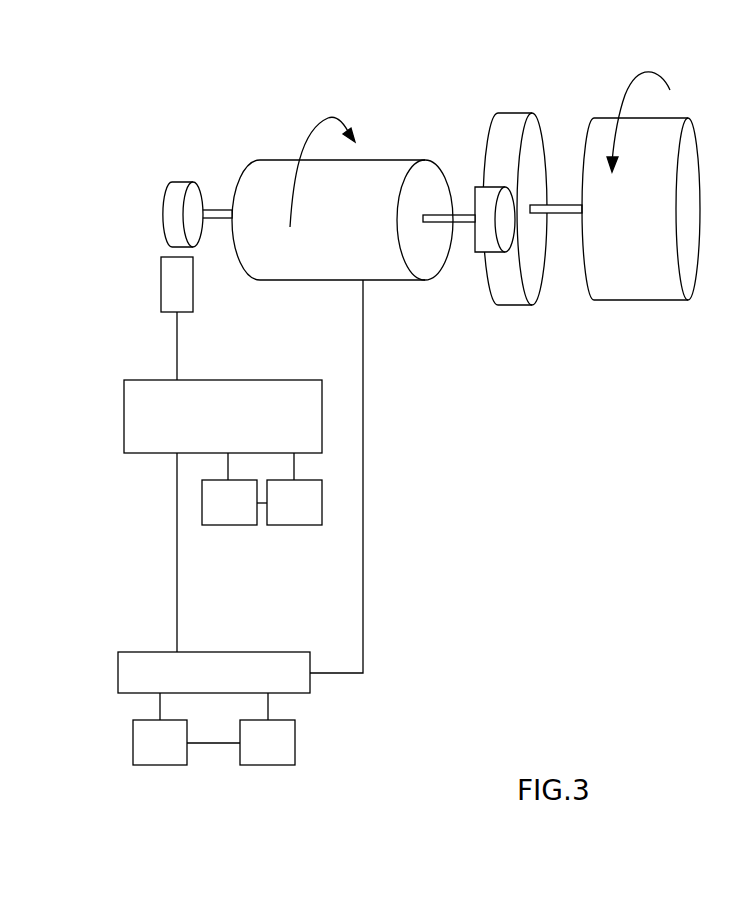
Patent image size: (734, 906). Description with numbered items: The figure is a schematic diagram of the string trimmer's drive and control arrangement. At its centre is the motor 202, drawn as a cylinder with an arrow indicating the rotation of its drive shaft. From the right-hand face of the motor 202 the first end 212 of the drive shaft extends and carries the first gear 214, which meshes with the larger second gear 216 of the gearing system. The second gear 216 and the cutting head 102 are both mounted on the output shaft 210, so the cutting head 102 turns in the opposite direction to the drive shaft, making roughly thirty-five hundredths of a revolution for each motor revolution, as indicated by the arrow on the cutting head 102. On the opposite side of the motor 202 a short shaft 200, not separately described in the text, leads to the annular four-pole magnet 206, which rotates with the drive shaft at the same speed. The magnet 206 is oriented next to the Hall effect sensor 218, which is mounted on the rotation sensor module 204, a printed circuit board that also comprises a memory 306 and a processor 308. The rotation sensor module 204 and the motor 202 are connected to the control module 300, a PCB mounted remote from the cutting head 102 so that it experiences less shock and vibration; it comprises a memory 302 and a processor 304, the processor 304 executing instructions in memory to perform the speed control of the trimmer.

The cutting head 102 is at (650, 280).
The shaft 200 is at (218, 213).
The motor 202 is at (272, 180).
The rotation sensor module 204 is at (243, 432).
The annular 4-pole magnet 206 is at (163, 207).
The output shaft 210 is at (560, 208).
The first end of the drive shaft 212 is at (463, 222).
The first gear 214 is at (493, 242).
The second gear 216 is at (512, 123).
The Hall effect sensor 218 is at (178, 290).
The control module 300 is at (245, 687).
The memory 302 is at (147, 737).
The processor 304 is at (287, 737).
The memory 306 is at (225, 512).
The processor 308 is at (293, 510).